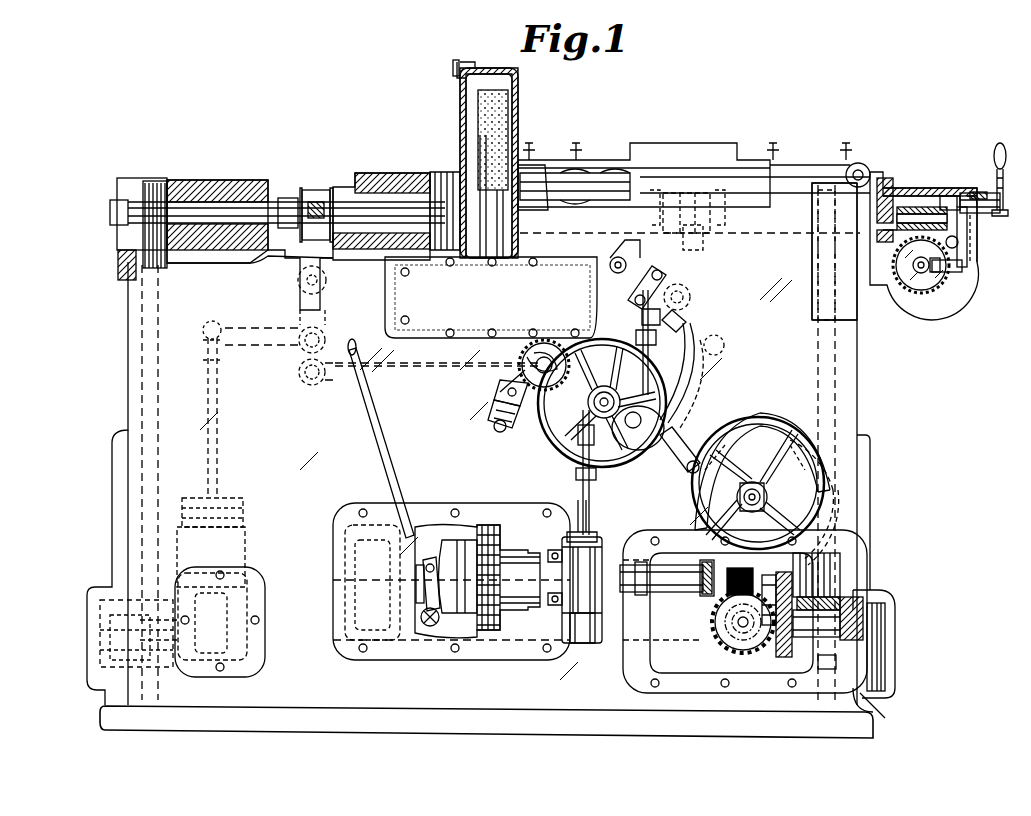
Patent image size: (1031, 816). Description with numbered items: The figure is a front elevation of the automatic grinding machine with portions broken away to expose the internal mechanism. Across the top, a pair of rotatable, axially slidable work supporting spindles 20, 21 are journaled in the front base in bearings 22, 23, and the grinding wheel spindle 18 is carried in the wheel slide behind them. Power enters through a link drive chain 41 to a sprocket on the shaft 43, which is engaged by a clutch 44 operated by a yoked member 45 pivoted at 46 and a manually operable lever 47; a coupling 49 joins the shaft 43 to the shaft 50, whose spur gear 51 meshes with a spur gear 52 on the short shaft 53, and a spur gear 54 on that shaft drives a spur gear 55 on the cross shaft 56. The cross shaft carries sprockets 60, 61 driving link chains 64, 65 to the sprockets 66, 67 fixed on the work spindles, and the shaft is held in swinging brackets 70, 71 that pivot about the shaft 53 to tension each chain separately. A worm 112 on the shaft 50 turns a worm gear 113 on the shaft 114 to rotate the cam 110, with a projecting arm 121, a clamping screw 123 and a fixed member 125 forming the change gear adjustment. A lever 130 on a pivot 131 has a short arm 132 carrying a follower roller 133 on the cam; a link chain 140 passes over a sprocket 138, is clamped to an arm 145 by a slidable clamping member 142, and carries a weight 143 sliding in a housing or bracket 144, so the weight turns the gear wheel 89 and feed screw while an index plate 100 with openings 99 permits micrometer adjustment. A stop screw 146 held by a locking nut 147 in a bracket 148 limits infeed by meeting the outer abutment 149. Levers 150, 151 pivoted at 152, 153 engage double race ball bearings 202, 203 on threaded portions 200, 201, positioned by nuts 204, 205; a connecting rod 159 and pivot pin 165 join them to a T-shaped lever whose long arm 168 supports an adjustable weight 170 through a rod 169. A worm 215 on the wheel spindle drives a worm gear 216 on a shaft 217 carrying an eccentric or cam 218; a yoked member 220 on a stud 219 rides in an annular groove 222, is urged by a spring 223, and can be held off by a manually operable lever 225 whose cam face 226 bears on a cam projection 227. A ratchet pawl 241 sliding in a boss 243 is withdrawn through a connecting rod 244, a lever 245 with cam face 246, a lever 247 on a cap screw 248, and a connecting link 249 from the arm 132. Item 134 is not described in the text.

The grinding wheel spindle 18 is at (885, 235).
The work supporting spindle 20 is at (390, 207).
The work supporting spindle 21 is at (760, 200).
The bearings 22 is at (218, 187).
The bearings 23 is at (590, 180).
The link drive chain 41 is at (470, 533).
The shaft 43 is at (586, 560).
The clutch 44 is at (455, 540).
The yoked member 45 is at (430, 580).
The pivot 46 is at (432, 626).
The manually operable lever 47 is at (377, 440).
The coupling 49 is at (650, 567).
The shaft 50 is at (700, 587).
The spur gear 51 is at (820, 545).
The spur gear 52 is at (784, 657).
The short shaft 53 is at (850, 605).
The spur gear 54 is at (875, 605).
The spur gear 55 is at (888, 672).
The cross shaft 56 is at (678, 657).
The sprocket 60 is at (150, 657).
The sprocket 61 is at (826, 669).
The link chain 64 is at (118, 265).
The link chain 65 is at (832, 340).
The sprocket 66 is at (142, 190).
The sprocket 67 is at (833, 197).
The swinging bracket 70 is at (118, 665).
The swinging bracket 71 is at (880, 712).
The gear wheel 89 is at (565, 430).
The opening 99 is at (560, 340).
The index plate 100 is at (543, 343).
The cam 110 is at (775, 440).
The worm 112 is at (732, 640).
The worm gear 113 is at (743, 628).
The shaft 114 is at (745, 630).
The projecting arm 121 is at (768, 497).
The clamping screw 123 is at (830, 480).
The member 125 is at (826, 458).
The lever 130 is at (705, 412).
The pivot 131 is at (645, 450).
The short arm 132 is at (668, 446).
The follower roller 133 is at (690, 473).
The bracket 134 is at (830, 505).
The sprocket 138 is at (590, 455).
The link chain 140 is at (583, 465).
The slidable clamping member 142 is at (683, 325).
The weight 143 is at (590, 640).
The housing or bracket 144 is at (575, 600).
The arm 145 is at (698, 362).
The stop screw 146 is at (496, 430).
The locking nut 147 is at (490, 412).
The bracket 148 is at (497, 388).
The outer abutment 149 is at (512, 381).
The lever 150 is at (290, 255).
The lever 151 is at (705, 245).
The pivot 152 is at (305, 282).
The pivot 153 is at (690, 295).
The connecting rod 159 is at (440, 375).
The pivot pin 165 is at (305, 375).
The long arm 168 is at (232, 332).
The rod 169 is at (205, 345).
The adjustable weight 170 is at (225, 545).
The threaded portion 200 is at (288, 200).
The threaded portion 201 is at (708, 205).
The double race ball bearing 202 is at (314, 195).
The double race ball bearing 203 is at (682, 193).
The nut 204 is at (301, 195).
The nut 205 is at (652, 200).
The worm 215 is at (920, 212).
The worm gear 216 is at (910, 278).
The shaft 217 is at (921, 270).
The eccentric or cam 218 is at (927, 272).
The stud or shaft 219 is at (958, 241).
The yoked member 220 is at (962, 262).
The annular groove 222 is at (950, 196).
The spring 223 is at (975, 280).
The manually operable lever 225 is at (1000, 143).
The cam face 226 is at (997, 183).
The cam projection 227 is at (975, 193).
The ratchet pawl 241 is at (500, 250).
The boss 243 is at (540, 195).
The connecting rod 244 is at (560, 200).
The lever 245 is at (626, 268).
The cam face 246 is at (641, 310).
The lever 247 is at (660, 315).
The cap screw 248 is at (665, 275).
The connecting link 249 is at (636, 338).